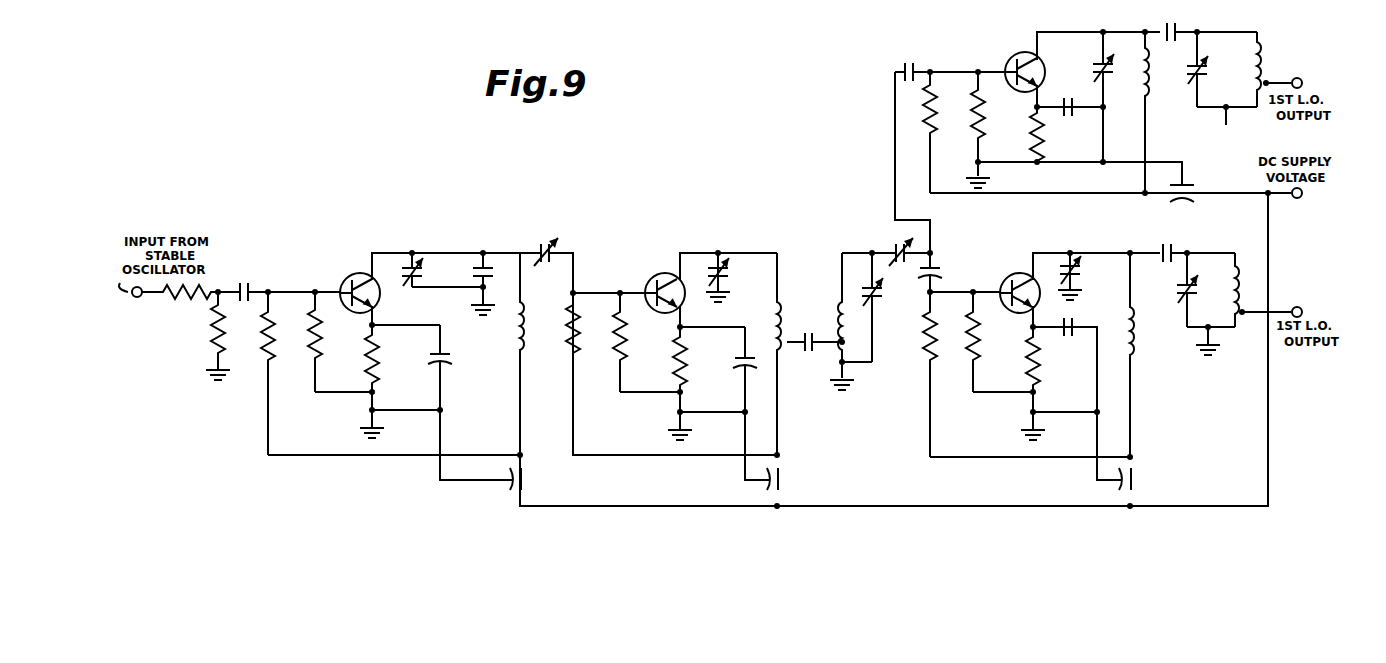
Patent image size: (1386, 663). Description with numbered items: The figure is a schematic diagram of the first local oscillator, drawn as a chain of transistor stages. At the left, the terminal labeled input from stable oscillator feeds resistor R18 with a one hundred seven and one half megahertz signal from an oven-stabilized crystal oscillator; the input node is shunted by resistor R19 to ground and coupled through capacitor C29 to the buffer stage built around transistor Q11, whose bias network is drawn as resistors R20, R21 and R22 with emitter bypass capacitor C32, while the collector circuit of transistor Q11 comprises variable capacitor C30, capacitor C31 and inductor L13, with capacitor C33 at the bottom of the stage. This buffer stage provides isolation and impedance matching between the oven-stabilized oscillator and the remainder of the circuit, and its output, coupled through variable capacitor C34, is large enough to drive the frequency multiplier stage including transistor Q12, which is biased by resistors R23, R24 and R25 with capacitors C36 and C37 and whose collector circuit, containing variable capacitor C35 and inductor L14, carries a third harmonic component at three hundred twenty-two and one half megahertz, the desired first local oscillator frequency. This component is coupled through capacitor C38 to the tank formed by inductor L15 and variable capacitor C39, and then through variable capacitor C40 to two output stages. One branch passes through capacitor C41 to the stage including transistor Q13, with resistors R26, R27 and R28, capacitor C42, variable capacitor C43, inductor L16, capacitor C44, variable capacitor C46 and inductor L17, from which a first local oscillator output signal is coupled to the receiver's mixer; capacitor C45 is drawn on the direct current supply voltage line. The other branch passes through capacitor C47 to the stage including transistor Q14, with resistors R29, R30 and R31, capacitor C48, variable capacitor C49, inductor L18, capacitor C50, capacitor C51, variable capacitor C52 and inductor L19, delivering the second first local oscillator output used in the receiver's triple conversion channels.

The resistor R18 is at (180, 300).
The resistor R19 is at (208, 336).
The resistor R20 is at (256, 373).
The resistor R21 is at (304, 342).
The resistor R22 is at (361, 381).
The resistor R23 is at (562, 374).
The resistor R24 is at (608, 342).
The resistor R25 is at (668, 383).
The resistor R26 is at (943, 132).
The resistor R27 is at (968, 130).
The resistor R28 is at (1023, 130).
The resistor R29 is at (918, 374).
The resistor R30 is at (963, 342).
The resistor R31 is at (1024, 383).
The coupling capacitor C29 is at (244, 285).
The variable capacitor C30 is at (409, 280).
The capacitor C31 is at (469, 284).
The capacitor C32 is at (426, 367).
The capacitor C33 is at (534, 482).
The variable capacitor C34 is at (546, 247).
The variable capacitor C35 is at (735, 277).
The capacitor C36 is at (734, 369).
The capacitor C37 is at (756, 482).
The coupling capacitor C38 is at (808, 351).
The variable capacitor C39 is at (884, 307).
The variable capacitor C40 is at (897, 249).
The coupling capacitor C41 is at (906, 64).
The capacitor C42 is at (1069, 115).
The variable capacitor C43 is at (1092, 97).
The capacitor C44 is at (1171, 23).
The capacitor C45 is at (1198, 199).
The variable capacitor C46 is at (1209, 69).
The capacitor C47 is at (946, 272).
The capacitor C48 is at (1069, 336).
The variable capacitor C49 is at (1087, 276).
The capacitor C50 is at (1165, 244).
The capacitor C51 is at (1141, 470).
The variable capacitor C52 is at (1170, 290).
The inductor L13 is at (506, 354).
The inductor L14 is at (763, 354).
The inductor L15 is at (833, 321).
The inductor L16 is at (1160, 112).
The inductor L17 is at (1279, 69).
The inductor L18 is at (1147, 355).
The inductor L19 is at (1217, 304).
The transistor Q11 is at (360, 286).
The transistor Q12 is at (665, 286).
The transistor Q13 is at (1024, 64).
The transistor Q14 is at (1020, 286).